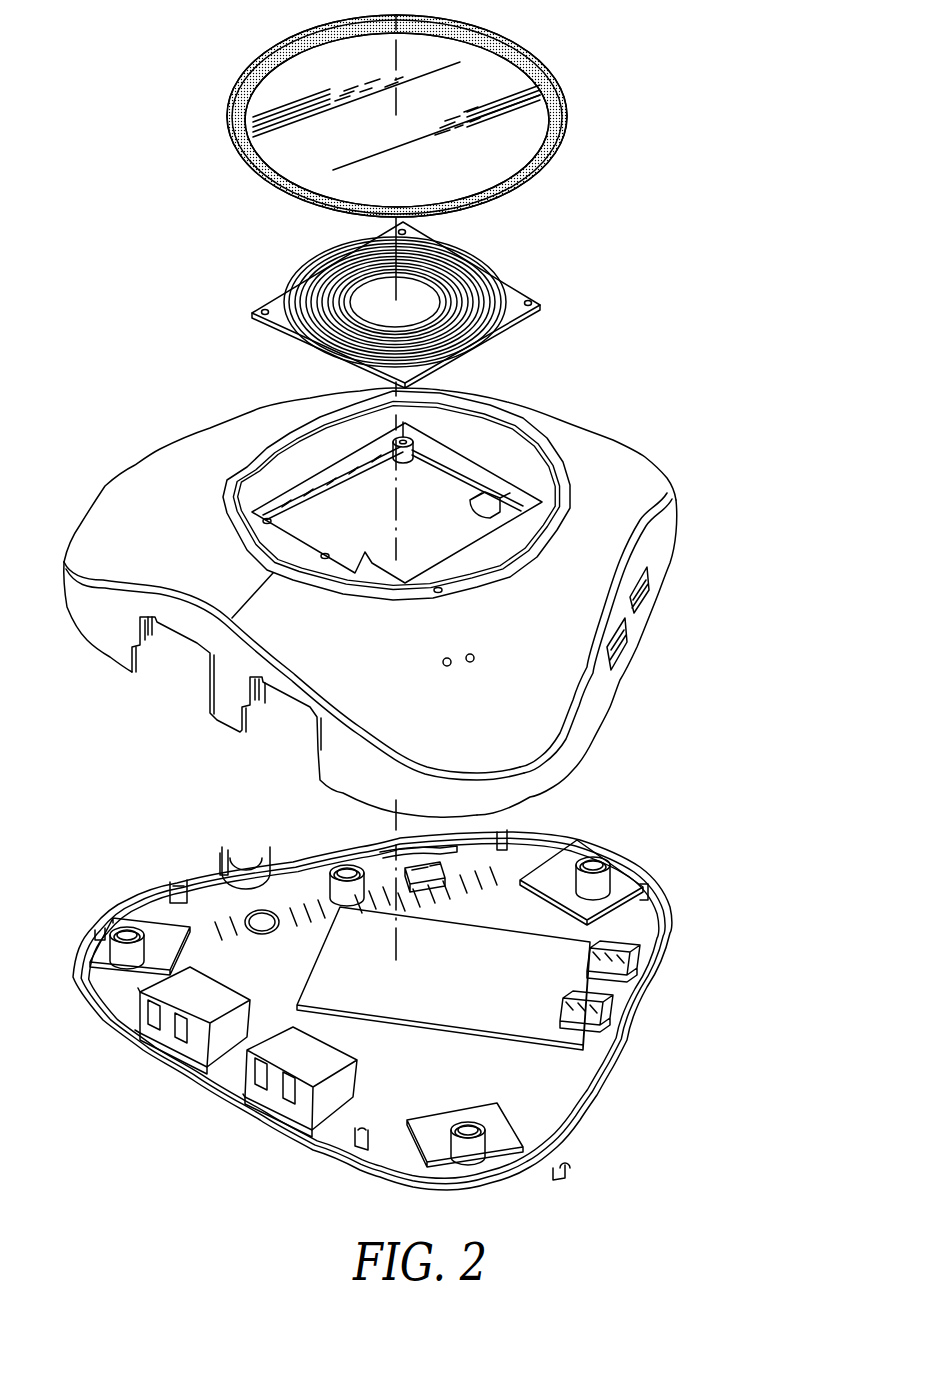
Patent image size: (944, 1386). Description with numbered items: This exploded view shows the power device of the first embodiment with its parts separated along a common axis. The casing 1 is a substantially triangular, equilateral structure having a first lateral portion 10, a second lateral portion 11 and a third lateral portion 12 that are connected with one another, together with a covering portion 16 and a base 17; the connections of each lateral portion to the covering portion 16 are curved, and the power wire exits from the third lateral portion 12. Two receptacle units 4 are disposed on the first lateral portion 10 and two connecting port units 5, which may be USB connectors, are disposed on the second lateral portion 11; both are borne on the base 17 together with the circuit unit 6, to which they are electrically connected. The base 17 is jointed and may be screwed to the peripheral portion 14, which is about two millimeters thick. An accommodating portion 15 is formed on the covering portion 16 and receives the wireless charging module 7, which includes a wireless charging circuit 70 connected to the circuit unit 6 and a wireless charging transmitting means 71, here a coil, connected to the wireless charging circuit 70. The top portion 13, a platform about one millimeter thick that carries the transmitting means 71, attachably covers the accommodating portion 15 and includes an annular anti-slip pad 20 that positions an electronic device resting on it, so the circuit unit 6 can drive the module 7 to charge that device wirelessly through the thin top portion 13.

The casing 1 is at (613, 432).
The anti-slip pad 20 is at (557, 78).
The top portion 13 is at (503, 150).
The wireless charging module 7 is at (451, 307).
The wireless charging transmitting means 71 is at (483, 270).
The wireless charging circuit 70 is at (513, 308).
The first lateral portion 10 is at (409, 594).
The third lateral portion 12 is at (147, 463).
The accommodating portion 15 is at (290, 500).
The covering portion 16 is at (635, 481).
The second lateral portion 11 is at (655, 552).
The peripheral portion 14 is at (617, 712).
The base 17 is at (627, 847).
The circuit unit 6 is at (513, 1020).
The connecting port units 5 is at (617, 963).
The receptacle units 4 is at (280, 1103).